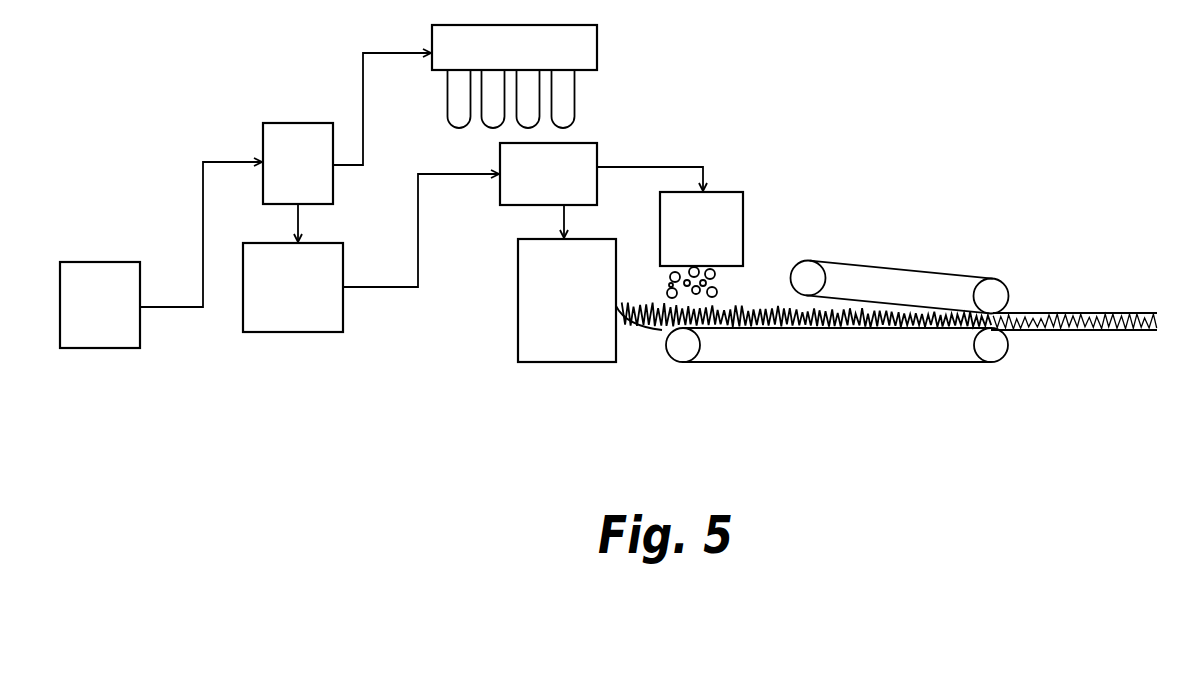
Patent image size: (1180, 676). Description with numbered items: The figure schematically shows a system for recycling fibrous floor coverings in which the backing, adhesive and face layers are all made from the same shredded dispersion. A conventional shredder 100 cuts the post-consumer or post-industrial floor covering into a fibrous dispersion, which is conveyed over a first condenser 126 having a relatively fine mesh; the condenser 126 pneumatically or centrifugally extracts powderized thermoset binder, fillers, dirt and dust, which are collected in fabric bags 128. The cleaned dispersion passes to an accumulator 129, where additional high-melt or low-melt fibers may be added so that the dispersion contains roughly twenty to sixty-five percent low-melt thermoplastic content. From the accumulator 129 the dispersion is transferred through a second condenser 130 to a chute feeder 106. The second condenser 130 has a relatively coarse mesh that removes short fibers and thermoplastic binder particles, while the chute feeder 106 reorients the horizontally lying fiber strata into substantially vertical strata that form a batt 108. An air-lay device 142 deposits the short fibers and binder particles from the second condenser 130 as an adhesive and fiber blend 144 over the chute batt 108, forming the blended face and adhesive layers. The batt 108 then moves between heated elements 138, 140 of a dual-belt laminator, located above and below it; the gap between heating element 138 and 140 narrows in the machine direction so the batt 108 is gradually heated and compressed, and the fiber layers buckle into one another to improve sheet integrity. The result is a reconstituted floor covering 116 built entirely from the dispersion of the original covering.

The shredder 100 is at (100, 305).
The first condenser 126 is at (298, 163).
The accumulator 129 is at (293, 287).
The fabric bags 128 is at (514, 76).
The second condenser 130 is at (548, 174).
The chute feeder 106 is at (567, 300).
The air-lay device 142 is at (701, 229).
The adhesive and fiber blend 144 is at (717, 289).
The batt 108 is at (663, 328).
The reconstituted floor covering 116 is at (1073, 339).
The lower heating element 140 is at (863, 363).
The upper heating element 138 is at (888, 267).